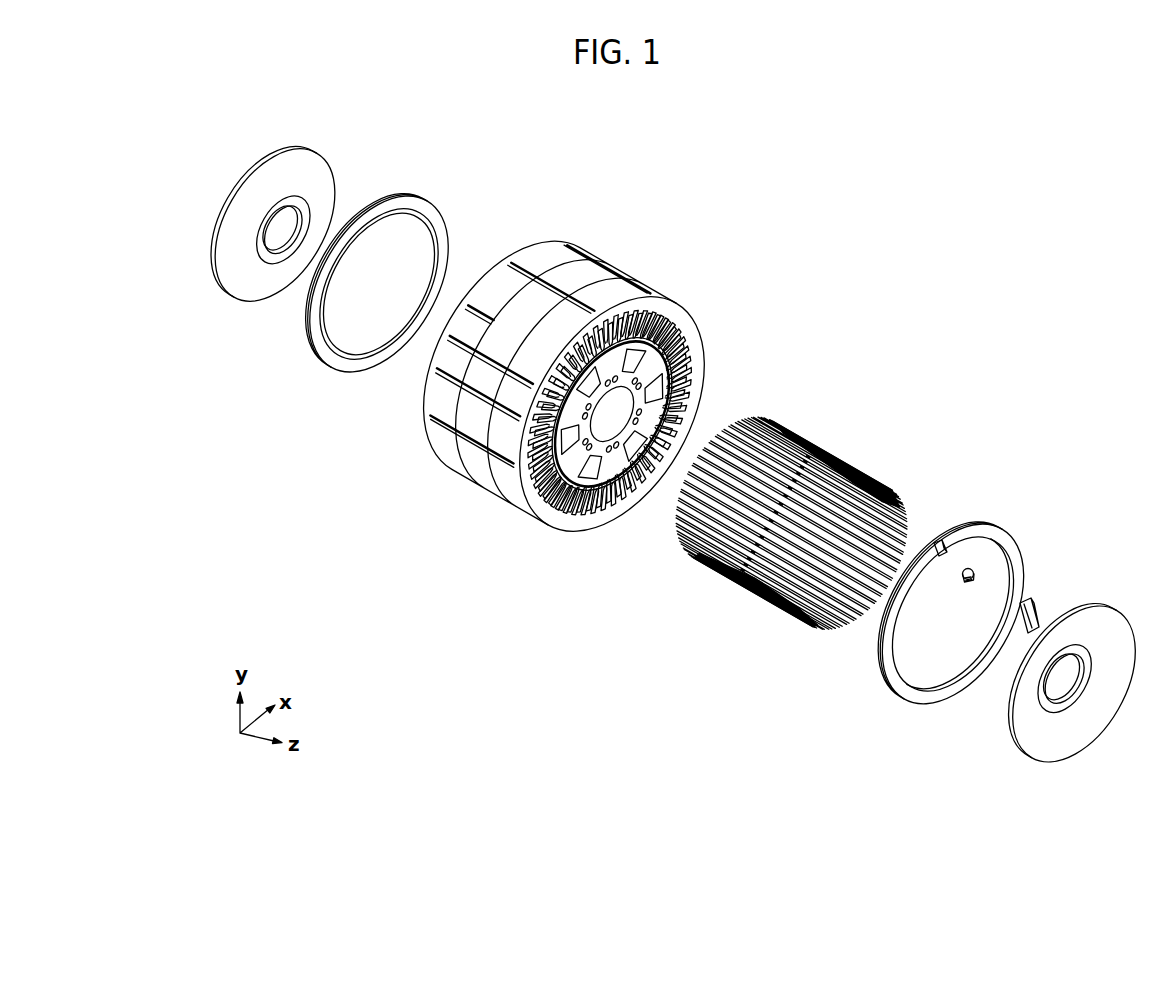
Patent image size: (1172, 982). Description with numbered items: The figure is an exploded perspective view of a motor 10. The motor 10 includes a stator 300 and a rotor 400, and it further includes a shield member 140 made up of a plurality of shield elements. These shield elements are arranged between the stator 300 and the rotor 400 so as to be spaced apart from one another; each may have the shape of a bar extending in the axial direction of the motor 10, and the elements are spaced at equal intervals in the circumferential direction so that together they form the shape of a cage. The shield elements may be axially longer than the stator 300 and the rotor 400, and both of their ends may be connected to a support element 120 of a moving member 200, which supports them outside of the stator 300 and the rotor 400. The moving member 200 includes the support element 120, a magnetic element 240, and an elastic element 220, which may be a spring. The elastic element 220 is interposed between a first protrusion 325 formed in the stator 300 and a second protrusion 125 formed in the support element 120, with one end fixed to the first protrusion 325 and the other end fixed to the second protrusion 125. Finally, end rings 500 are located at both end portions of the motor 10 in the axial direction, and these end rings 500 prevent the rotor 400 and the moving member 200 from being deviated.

The motor 10 is at (1066, 219).
The support element 120 is at (348, 372).
The second protrusion 125 is at (943, 540).
The shield member 140 is at (840, 444).
The moving member 200 is at (935, 550).
The elastic element 220 is at (966, 568).
The magnetic element 240 is at (1052, 553).
The stator 300 is at (578, 378).
The first protrusion 325 is at (581, 326).
The rotor 400 is at (683, 363).
The end rings 500 is at (252, 298).